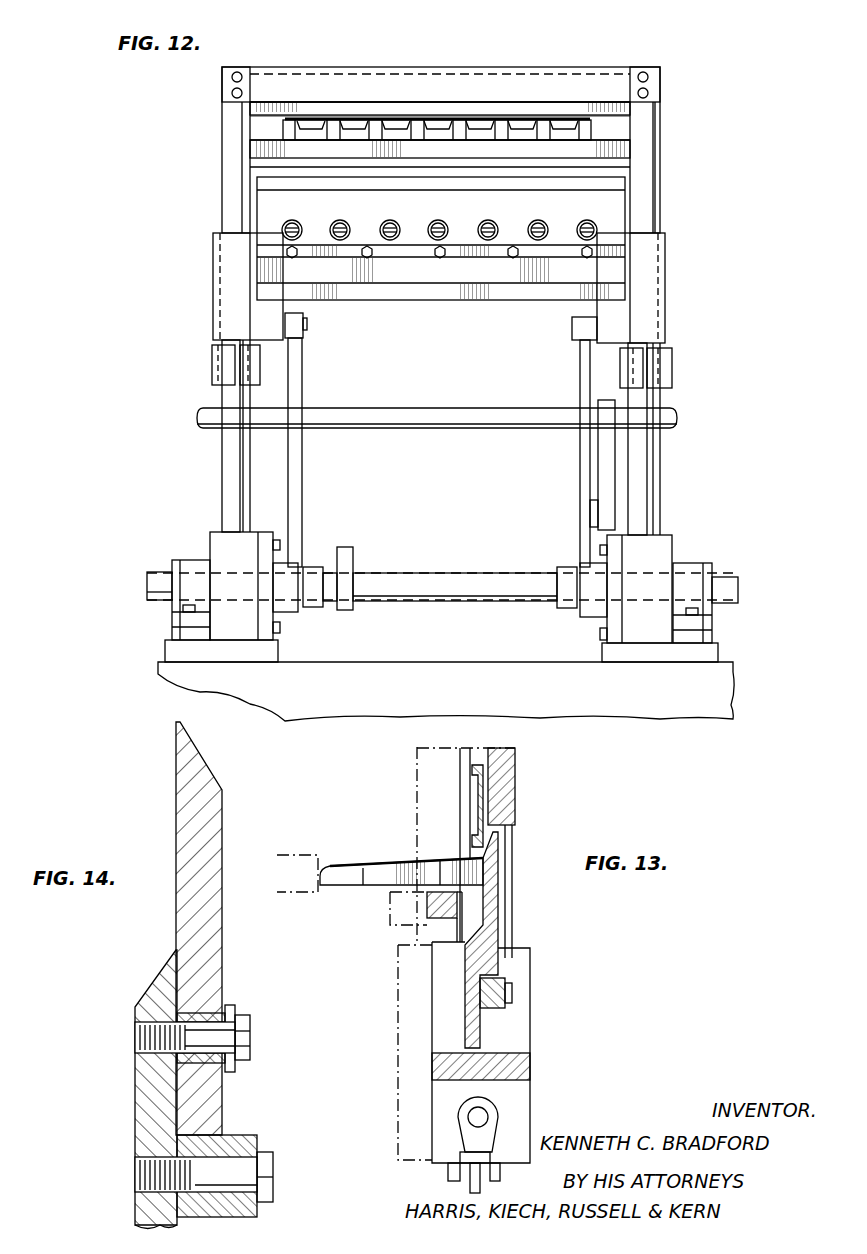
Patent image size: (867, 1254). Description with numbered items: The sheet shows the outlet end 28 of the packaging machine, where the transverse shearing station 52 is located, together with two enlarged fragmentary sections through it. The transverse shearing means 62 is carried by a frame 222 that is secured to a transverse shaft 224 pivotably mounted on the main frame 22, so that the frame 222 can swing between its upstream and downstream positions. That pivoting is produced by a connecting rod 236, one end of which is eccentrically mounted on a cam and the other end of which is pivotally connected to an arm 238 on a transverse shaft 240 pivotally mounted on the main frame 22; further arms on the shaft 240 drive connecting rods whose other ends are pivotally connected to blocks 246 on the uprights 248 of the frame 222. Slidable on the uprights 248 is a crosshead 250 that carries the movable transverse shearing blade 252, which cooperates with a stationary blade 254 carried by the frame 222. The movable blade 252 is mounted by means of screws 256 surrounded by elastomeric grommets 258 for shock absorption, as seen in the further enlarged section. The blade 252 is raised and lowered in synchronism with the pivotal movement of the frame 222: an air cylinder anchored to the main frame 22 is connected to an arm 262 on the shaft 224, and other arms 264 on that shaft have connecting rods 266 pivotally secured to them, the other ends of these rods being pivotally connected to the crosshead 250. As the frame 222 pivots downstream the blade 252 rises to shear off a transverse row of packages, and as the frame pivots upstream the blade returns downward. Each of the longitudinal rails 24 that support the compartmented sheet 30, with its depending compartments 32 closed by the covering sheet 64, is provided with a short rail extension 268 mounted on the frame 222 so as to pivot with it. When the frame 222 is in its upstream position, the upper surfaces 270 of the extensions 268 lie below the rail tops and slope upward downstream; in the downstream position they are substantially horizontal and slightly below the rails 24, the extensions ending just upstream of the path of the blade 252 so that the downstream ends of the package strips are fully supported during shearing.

In FIG. 12, the frame 22 is at (740, 683).
In FIG. 13, the longitudinal rails 24 is at (290, 852).
In FIG. 12, the outlet end 28 is at (676, 58).
In FIG. 12, the compartmented sheet 30 is at (568, 130).
In FIG. 12, the compartments 32 is at (524, 130).
In FIG. 12, the transverse shearing station 52 is at (360, 65).
In FIG. 13, the transverse shearing means 62 is at (524, 817).
In FIG. 12, the covering sheet 64 is at (560, 157).
In FIG. 12, the frame 222 is at (662, 190).
In FIG. 12, the transverse shaft 224 is at (725, 580).
In FIG. 12, the connecting rod 236 is at (590, 510).
In FIG. 12, the arm 238 is at (608, 452).
In FIG. 12, the transverse shaft 240 is at (672, 410).
In FIG. 12, the blocks 246 is at (216, 362).
In FIG. 12, the uprights 248 is at (232, 462).
In FIG. 12, the crosshead 250 is at (668, 270).
In FIG. 13, the crosshead 250 is at (536, 1092).
In FIG. 12, the transverse shearing blade 252 is at (270, 200).
In FIG. 14, the transverse shearing blade 252 is at (205, 812).
In FIG. 13, the transverse shearing blade 252 is at (492, 893).
In FIG. 12, the stationary blade 254 is at (622, 112).
In FIG. 13, the stationary blade 254 is at (478, 827).
In FIG. 12, the screws 256 is at (296, 226).
In FIG. 14, the screws 256 is at (252, 1033).
In FIG. 13, the screws 256 is at (512, 943).
In FIG. 14, the elastomeric grommets 258 is at (231, 1008).
In FIG. 12, the arm 262 is at (350, 556).
In FIG. 12, the arms 264 is at (316, 566).
In FIG. 12, the connecting rods 266 is at (302, 460).
In FIG. 13, the connecting rods 266 is at (470, 1172).
In FIG. 12, the rail extensions 268 is at (373, 118).
In FIG. 13, the rail extensions 268 is at (390, 878).
In FIG. 13, the upper surfaces 270 is at (422, 858).